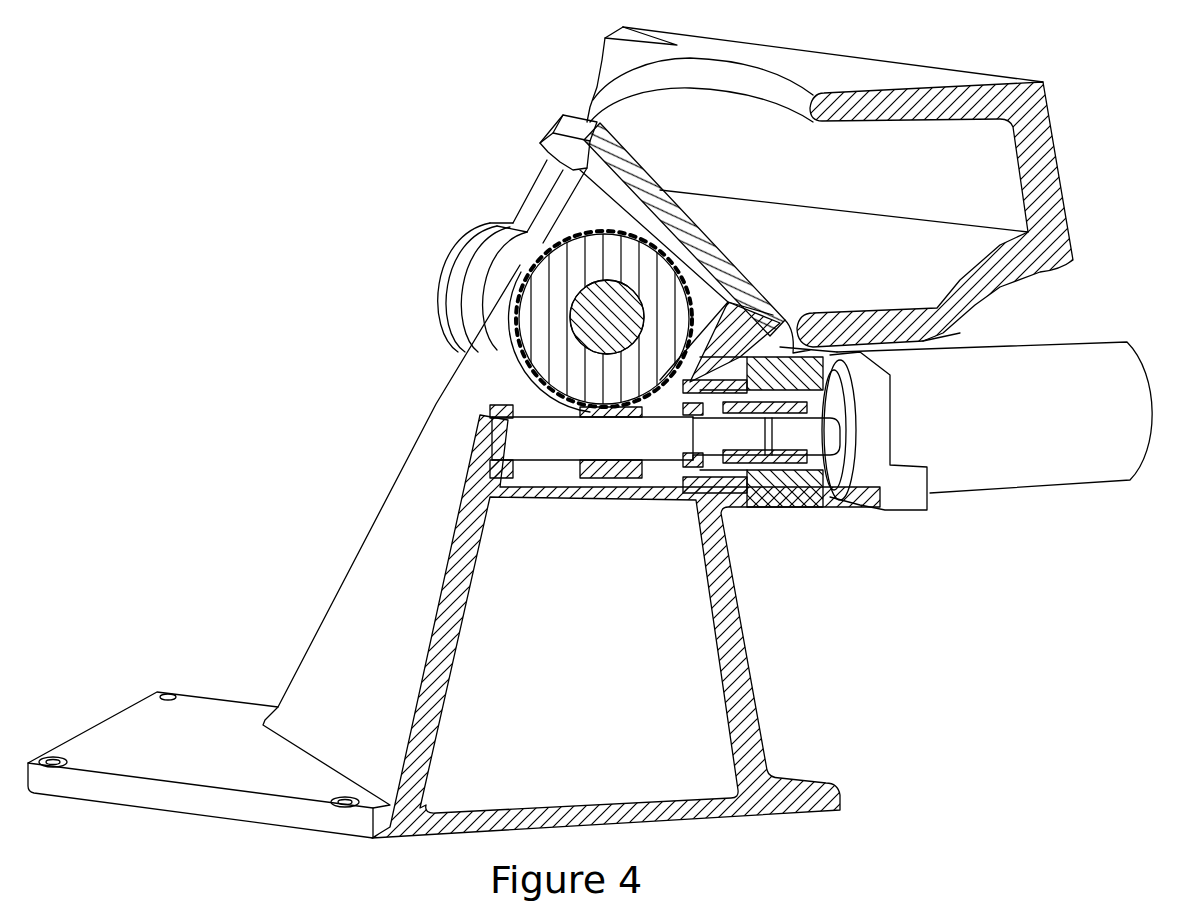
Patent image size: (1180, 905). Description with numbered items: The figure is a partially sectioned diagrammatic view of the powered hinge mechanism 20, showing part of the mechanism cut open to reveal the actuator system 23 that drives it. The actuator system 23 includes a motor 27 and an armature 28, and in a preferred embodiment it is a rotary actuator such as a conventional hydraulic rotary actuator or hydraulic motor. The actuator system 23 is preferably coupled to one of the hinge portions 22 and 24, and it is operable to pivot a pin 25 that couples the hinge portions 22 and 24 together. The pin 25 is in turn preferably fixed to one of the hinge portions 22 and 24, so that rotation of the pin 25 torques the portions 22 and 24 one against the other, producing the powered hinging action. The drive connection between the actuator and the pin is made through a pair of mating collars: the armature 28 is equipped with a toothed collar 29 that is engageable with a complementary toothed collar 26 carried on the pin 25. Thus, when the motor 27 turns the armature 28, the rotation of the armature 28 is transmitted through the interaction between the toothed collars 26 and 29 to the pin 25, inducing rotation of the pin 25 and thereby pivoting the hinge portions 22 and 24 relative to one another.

The hinge mechanism 20 is at (349, 447).
The hinge portion 22 is at (402, 573).
The actuator system 23 is at (740, 515).
The hinge portion 24 is at (1007, 107).
The pin 25 is at (578, 290).
The toothed collar 26 is at (550, 340).
The motor 27 is at (957, 460).
The armature 28 is at (660, 447).
The toothed collar 29 is at (622, 476).